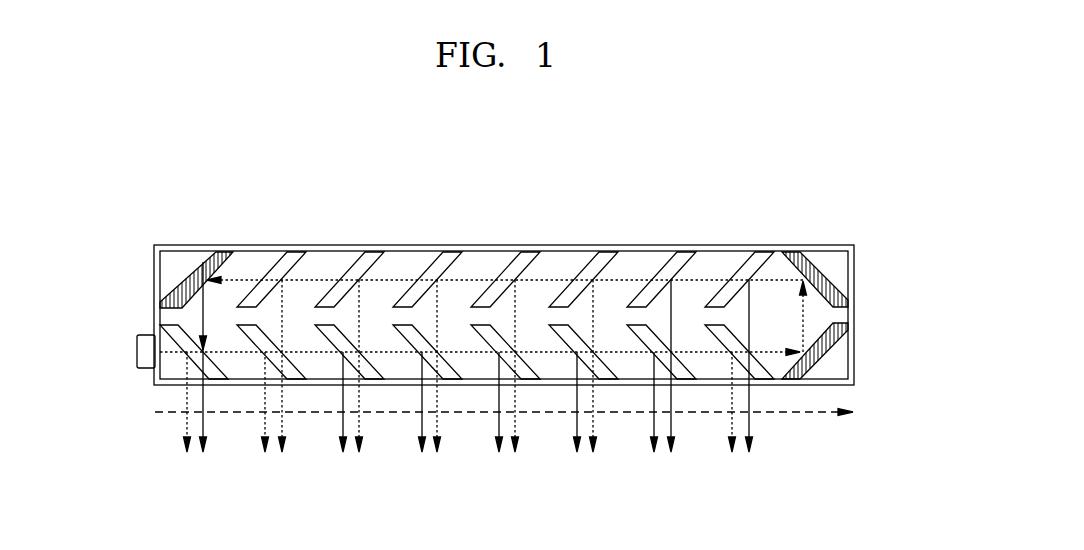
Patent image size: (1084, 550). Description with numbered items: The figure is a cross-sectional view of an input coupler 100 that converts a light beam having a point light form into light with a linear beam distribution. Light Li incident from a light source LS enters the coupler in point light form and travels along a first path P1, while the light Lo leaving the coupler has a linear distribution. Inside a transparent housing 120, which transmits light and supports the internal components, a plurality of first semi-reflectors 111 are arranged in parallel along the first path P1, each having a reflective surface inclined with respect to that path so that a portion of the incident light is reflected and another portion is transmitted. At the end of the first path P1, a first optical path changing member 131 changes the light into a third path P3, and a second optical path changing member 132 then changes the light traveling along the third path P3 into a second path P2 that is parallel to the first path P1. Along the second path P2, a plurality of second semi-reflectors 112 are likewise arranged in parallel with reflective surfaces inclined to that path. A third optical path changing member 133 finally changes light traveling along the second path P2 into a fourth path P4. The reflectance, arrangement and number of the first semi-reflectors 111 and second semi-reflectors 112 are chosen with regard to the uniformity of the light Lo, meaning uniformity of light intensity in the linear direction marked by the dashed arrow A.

The input coupler 100 is at (831, 188).
The housing 120 is at (413, 250).
The second semi-reflectors 112 is at (593, 257).
The first semi-reflectors 111 is at (528, 378).
The third optical path changing member 133 is at (205, 265).
The second optical path changing member 132 is at (823, 285).
The first optical path changing member 131 is at (823, 350).
The first path P1 is at (628, 354).
The second path P2 is at (710, 278).
The third path P3 is at (805, 317).
The fourth path P4 is at (203, 316).
The light source LS is at (137, 352).
The incident light Li is at (177, 352).
The emitted light Lo is at (468, 383).
The linear direction A is at (504, 429).